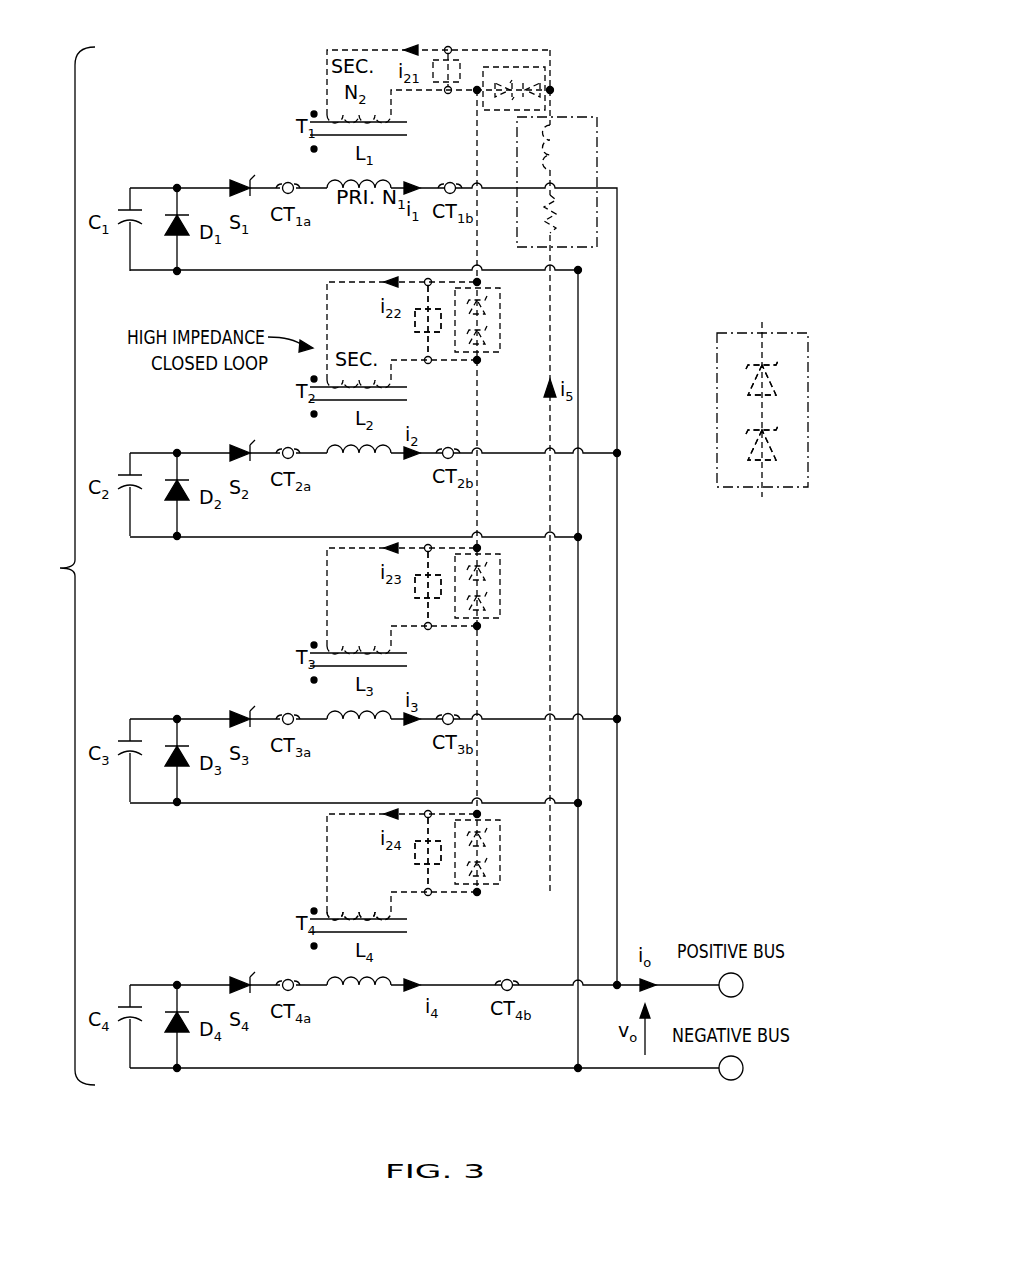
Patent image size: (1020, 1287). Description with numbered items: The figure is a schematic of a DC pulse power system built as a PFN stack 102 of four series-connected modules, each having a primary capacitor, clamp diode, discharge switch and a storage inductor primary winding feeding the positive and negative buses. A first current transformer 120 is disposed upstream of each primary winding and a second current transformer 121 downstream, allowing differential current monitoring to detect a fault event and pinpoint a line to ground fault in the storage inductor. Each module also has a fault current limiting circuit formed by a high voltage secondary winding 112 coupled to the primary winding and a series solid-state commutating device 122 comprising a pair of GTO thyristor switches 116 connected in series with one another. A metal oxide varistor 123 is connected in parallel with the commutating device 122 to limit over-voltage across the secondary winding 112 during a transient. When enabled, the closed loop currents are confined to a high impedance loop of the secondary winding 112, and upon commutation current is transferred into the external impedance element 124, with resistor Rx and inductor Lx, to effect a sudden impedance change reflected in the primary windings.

The PFN stack 102 is at (58, 566).
The secondary winding 112 is at (357, 905).
The GTO thyristor switch 116 is at (772, 449).
The current transformer 120 is at (283, 182).
The current transformer 121 is at (446, 182).
The series solid-state commutating device 122 is at (528, 64).
The metal oxide varistor 123 is at (453, 47).
The external impedance element 124 is at (575, 117).